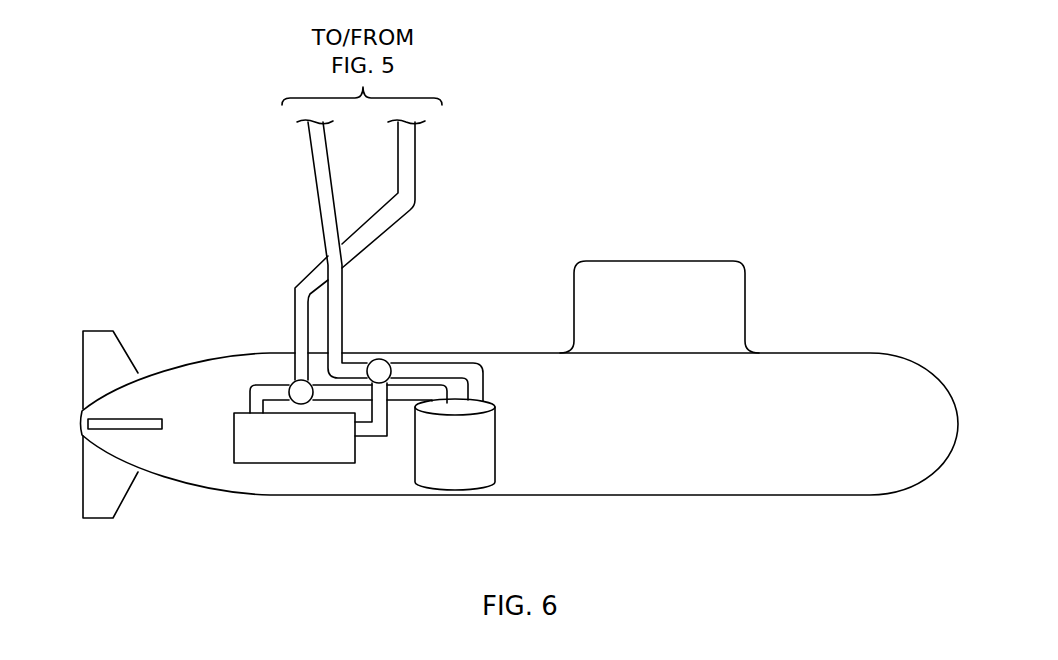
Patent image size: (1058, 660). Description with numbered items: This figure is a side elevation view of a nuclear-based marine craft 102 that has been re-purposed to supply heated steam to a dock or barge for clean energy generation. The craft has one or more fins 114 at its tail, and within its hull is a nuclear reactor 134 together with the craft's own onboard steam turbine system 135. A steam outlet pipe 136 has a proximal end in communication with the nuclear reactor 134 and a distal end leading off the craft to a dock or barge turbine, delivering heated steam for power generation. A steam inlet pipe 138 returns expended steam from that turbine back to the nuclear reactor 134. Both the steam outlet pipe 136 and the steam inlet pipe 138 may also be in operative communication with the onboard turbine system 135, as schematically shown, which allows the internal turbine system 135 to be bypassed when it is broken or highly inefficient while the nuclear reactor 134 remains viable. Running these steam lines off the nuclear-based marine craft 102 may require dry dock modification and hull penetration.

The nuclear-based marine craft 102 is at (748, 436).
The fin 114 is at (105, 345).
The nuclear reactor 134 is at (476, 475).
The onboard turbine system 135 is at (268, 452).
The steam outlet pipe 136 is at (318, 159).
The steam inlet pipe 138 is at (405, 155).